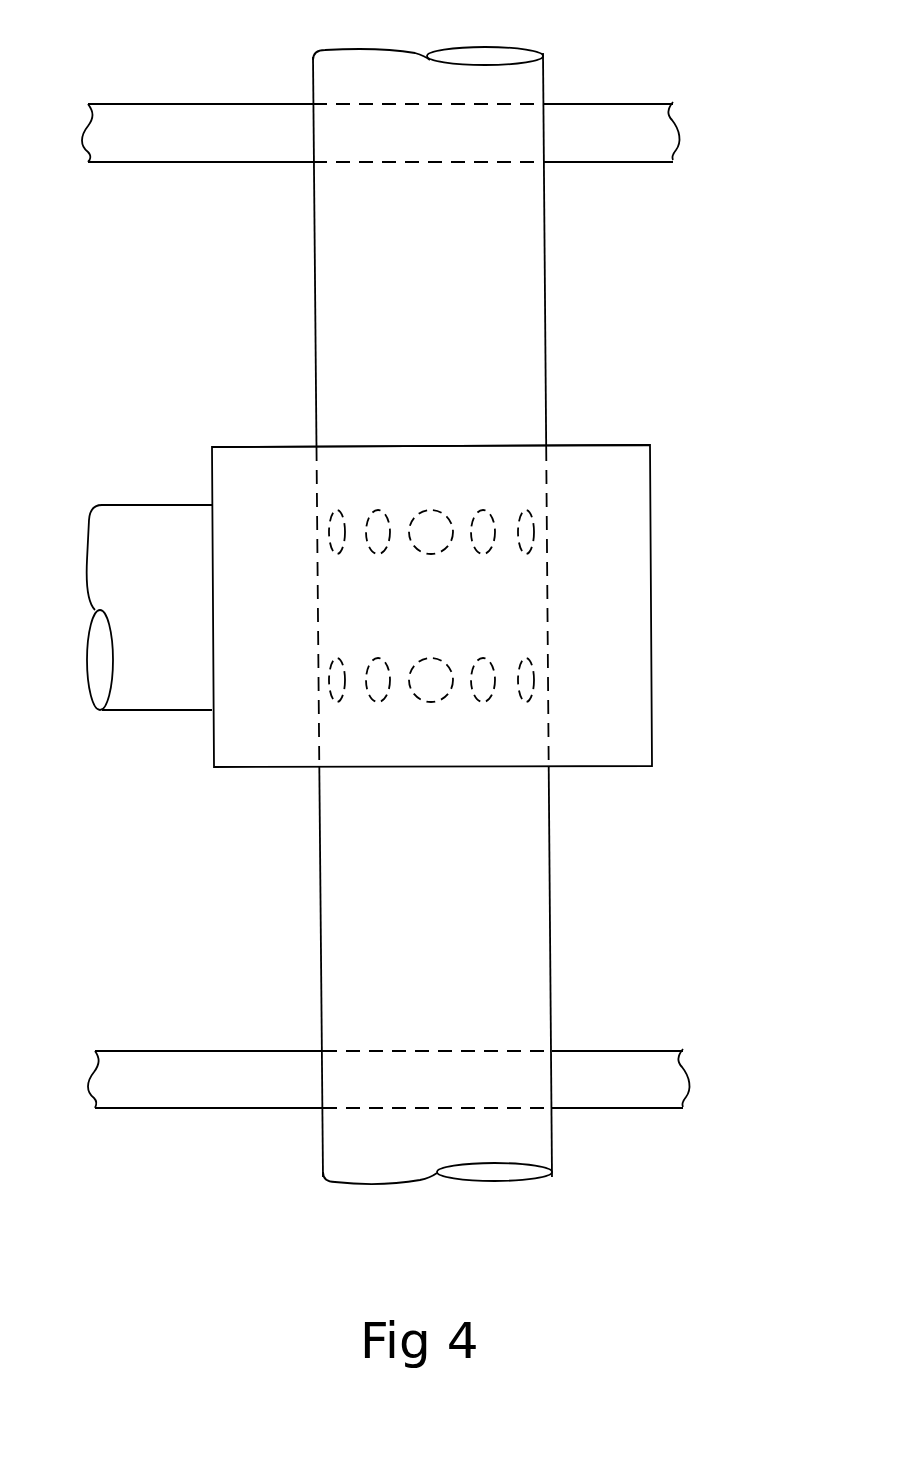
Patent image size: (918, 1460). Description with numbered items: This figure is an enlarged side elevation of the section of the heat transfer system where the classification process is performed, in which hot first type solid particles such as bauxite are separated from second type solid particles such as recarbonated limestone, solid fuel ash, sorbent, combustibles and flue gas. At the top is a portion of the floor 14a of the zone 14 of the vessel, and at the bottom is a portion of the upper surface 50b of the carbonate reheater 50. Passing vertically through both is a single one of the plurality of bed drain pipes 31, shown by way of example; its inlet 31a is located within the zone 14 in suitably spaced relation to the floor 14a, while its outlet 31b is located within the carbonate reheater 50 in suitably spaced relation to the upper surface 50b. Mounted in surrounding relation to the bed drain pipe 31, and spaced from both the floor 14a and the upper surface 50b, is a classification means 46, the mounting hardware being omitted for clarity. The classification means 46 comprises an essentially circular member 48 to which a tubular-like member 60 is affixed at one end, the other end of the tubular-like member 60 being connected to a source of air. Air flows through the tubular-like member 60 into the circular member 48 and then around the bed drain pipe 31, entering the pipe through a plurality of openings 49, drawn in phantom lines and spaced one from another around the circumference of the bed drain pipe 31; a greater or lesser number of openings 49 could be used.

The zone 14 is at (133, 66).
The floor 14a is at (146, 164).
The bed drain pipe 31 is at (445, 311).
The inlet 31a is at (483, 46).
The outlet 31b is at (495, 1183).
The classification means 46 is at (660, 596).
The circular member 48 is at (650, 445).
The openings 49 is at (526, 510).
The carbonate reheater 50 is at (145, 1162).
The upper surface 50b is at (151, 1052).
The tubular-like member 60 is at (128, 500).